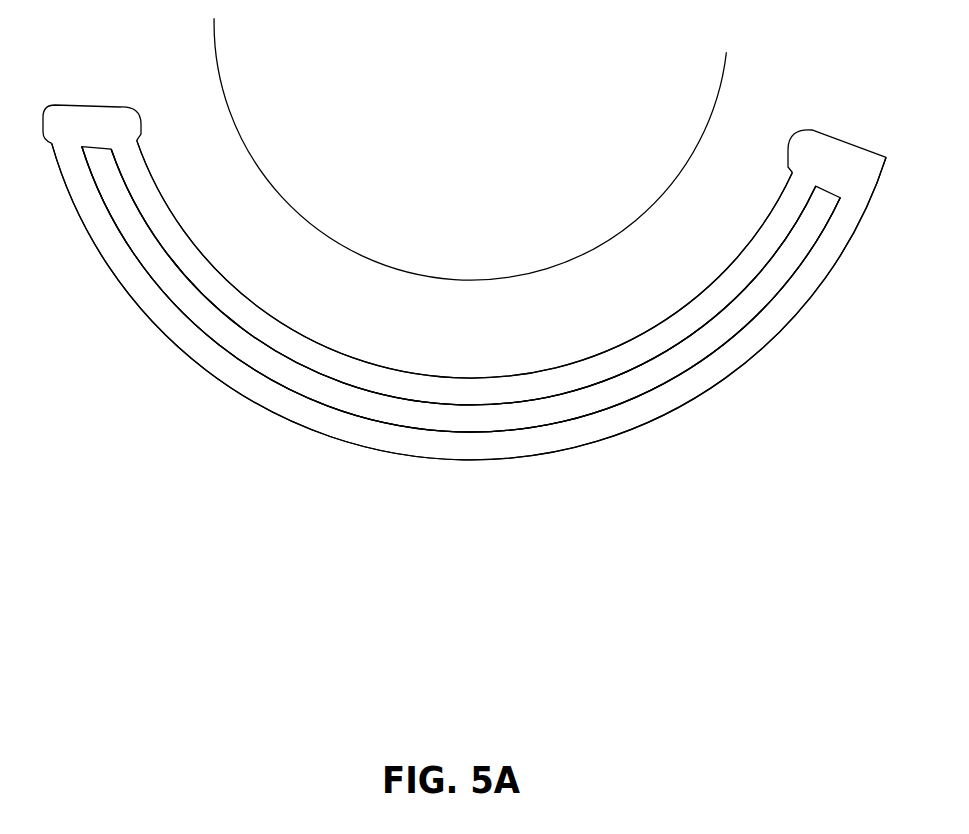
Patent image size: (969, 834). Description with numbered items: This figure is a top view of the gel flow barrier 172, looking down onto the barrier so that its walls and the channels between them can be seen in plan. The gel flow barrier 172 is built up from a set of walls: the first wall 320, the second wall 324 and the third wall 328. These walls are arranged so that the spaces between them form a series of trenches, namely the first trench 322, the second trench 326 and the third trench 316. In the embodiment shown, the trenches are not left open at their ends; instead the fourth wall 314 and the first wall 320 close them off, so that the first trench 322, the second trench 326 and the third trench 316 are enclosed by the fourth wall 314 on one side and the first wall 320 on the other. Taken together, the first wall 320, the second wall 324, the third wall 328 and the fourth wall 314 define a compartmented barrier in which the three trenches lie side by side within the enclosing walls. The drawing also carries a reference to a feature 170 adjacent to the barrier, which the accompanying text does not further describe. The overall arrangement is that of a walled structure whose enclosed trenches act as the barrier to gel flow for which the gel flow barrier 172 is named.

The wafer 170 is at (470, 149).
The gel flow barrier 172 is at (464, 335).
The fourth wall 314 is at (513, 376).
The third trench 316 is at (463, 272).
The first wall 320 is at (357, 447).
The first trench 322 is at (469, 302).
The second wall 324 is at (400, 428).
The second trench 326 is at (461, 290).
The third wall 328 is at (482, 406).